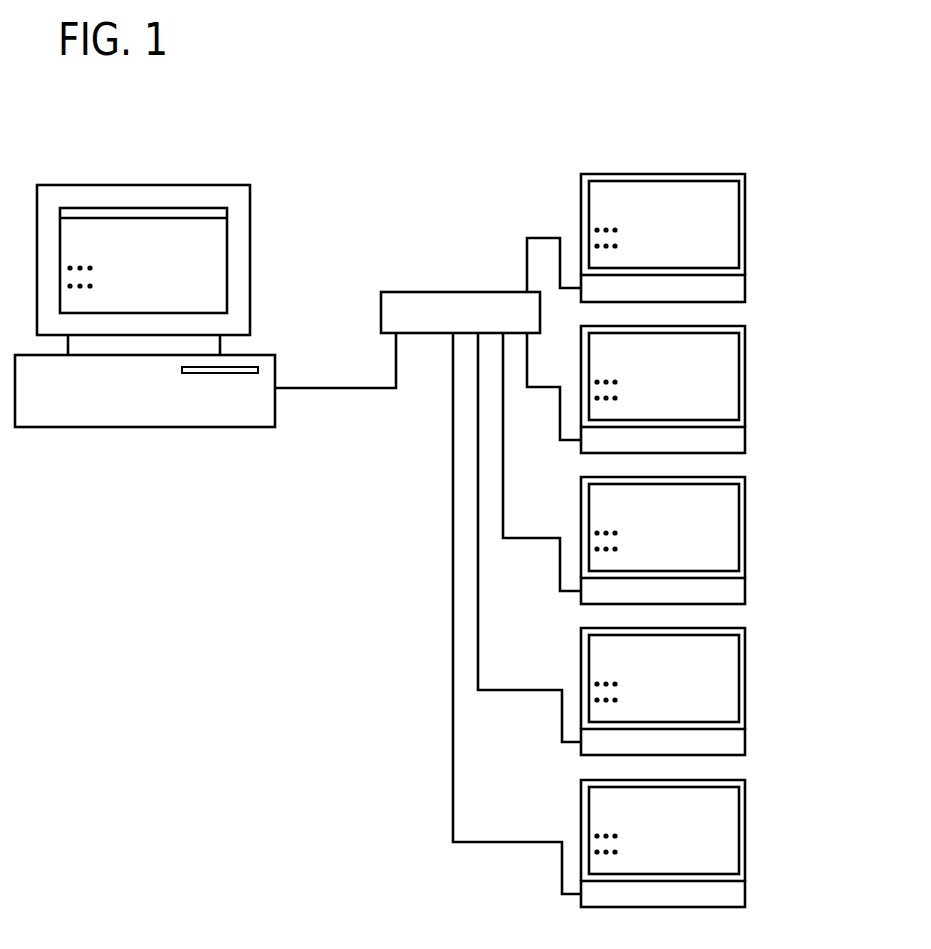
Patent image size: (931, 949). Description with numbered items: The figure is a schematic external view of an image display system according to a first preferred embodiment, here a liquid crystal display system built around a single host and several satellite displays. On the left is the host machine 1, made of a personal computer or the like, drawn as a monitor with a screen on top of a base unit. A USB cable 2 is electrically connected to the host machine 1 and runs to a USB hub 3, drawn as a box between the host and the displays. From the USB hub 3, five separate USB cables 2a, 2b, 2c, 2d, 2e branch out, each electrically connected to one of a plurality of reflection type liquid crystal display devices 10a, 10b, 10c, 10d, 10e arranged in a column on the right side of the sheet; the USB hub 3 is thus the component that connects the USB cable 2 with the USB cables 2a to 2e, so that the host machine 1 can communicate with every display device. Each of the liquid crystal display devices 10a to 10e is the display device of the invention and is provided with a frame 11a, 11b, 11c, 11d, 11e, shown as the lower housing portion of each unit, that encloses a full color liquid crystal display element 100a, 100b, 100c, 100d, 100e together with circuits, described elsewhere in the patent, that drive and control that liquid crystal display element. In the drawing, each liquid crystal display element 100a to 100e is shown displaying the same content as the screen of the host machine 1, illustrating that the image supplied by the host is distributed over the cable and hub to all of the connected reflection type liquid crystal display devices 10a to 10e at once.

The host machine 1 is at (145, 185).
The USB cable 2 is at (329, 395).
The USB hub 3 is at (458, 292).
The USB cable 2a is at (543, 236).
The USB cable 2b is at (541, 389).
The USB cable 2c is at (526, 540).
The USB cable 2d is at (517, 693).
The USB cable 2e is at (517, 845).
The reflection type liquid crystal display device 10a is at (745, 226).
The reflection type liquid crystal display device 10b is at (745, 378).
The reflection type liquid crystal display device 10c is at (745, 529).
The reflection type liquid crystal display device 10d is at (745, 680).
The reflection type liquid crystal display device 10e is at (745, 832).
The frame 11a is at (745, 287).
The frame 11b is at (745, 439).
The frame 11c is at (745, 590).
The frame 11d is at (745, 741).
The frame 11e is at (745, 893).
The full color liquid crystal display element 100a is at (730, 210).
The full color liquid crystal display element 100b is at (730, 362).
The full color liquid crystal display element 100c is at (730, 513).
The full color liquid crystal display element 100d is at (730, 664).
The full color liquid crystal display element 100e is at (730, 816).